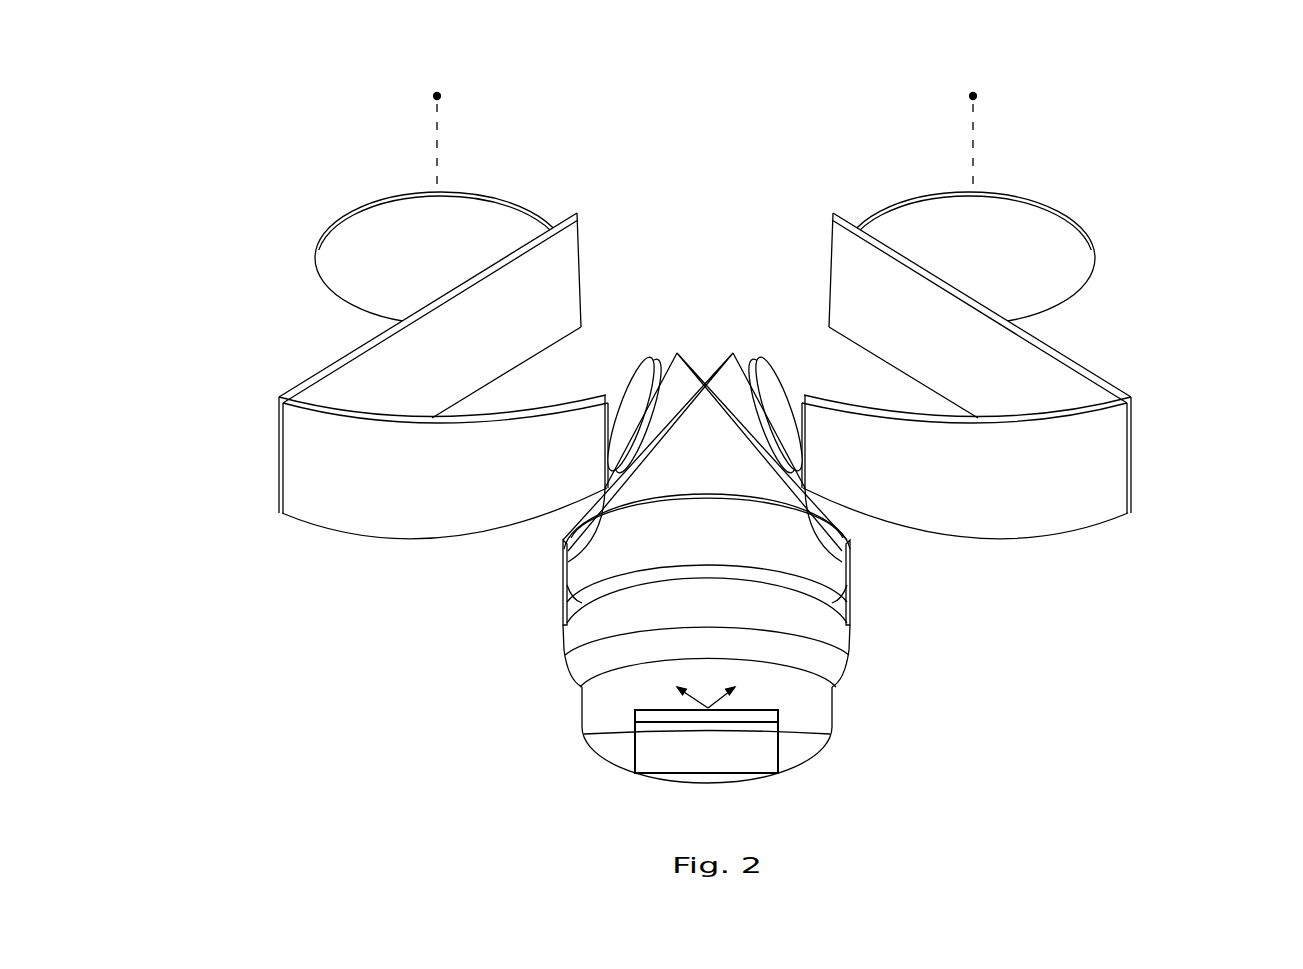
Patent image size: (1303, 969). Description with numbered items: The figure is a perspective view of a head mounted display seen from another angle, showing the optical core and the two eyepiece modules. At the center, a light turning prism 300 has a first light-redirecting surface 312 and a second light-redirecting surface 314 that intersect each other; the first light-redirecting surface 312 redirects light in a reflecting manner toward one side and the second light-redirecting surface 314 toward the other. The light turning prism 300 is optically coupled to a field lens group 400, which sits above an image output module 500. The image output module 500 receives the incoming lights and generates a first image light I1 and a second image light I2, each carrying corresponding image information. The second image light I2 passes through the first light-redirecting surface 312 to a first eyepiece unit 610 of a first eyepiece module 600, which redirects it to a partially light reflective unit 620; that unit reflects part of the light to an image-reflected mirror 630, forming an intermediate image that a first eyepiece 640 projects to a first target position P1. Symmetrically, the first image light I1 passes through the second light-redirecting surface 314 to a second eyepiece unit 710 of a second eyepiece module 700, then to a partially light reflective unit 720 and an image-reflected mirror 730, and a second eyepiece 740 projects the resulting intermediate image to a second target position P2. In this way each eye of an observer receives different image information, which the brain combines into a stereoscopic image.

The light turning prism 300 is at (708, 397).
The first light-redirecting surface 312 is at (564, 562).
The second light-redirecting surface 314 is at (846, 562).
The field lens group 400 is at (706, 662).
The image output module 500 is at (709, 748).
The first eyepiece module 600 is at (409, 370).
The first eyepiece unit 610 is at (633, 378).
The partially light reflective unit 620 is at (405, 513).
The image-reflected mirror 630 is at (572, 246).
The first eyepiece 640 is at (363, 208).
The second eyepiece module 700 is at (1001, 370).
The second eyepiece unit 710 is at (777, 378).
The partially light reflective unit 720 is at (1005, 513).
The image-reflected mirror 730 is at (838, 246).
The second eyepiece 740 is at (1047, 208).
The first target position P1 is at (436, 128).
The second target position P2 is at (972, 128).
The first image light I1 is at (690, 700).
The second image light I2 is at (724, 700).